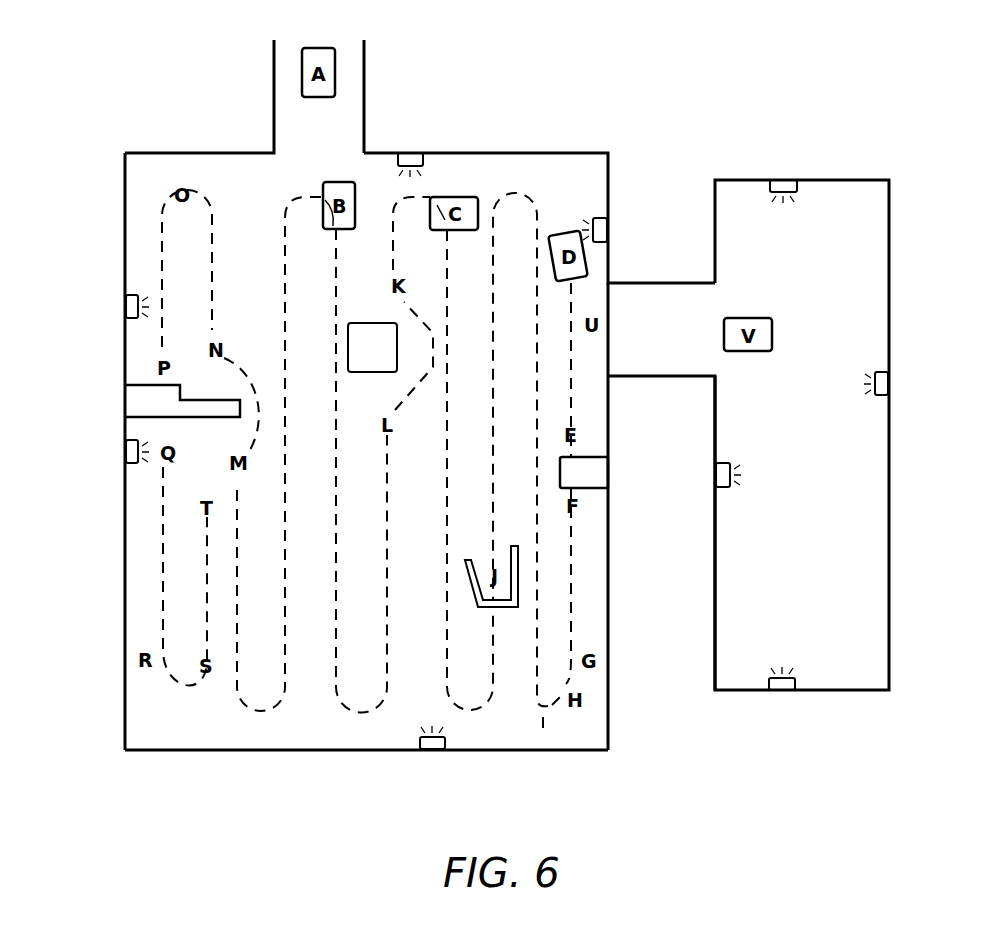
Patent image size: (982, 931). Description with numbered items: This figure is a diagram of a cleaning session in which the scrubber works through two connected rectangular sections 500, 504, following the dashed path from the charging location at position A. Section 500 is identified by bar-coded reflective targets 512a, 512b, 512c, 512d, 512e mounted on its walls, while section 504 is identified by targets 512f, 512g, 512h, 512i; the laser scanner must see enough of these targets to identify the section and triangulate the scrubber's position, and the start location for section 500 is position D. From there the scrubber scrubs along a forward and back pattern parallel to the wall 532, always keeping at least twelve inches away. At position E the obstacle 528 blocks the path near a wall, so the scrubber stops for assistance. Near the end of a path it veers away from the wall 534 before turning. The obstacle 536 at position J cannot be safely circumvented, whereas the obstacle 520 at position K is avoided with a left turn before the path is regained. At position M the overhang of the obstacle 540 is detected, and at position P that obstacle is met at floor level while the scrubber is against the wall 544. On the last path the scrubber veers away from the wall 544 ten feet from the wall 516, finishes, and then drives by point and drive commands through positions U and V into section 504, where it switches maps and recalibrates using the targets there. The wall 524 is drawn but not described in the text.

The section 500 is at (140, 261).
The section 504 is at (889, 275).
The target 512a is at (408, 153).
The target 512b is at (607, 233).
The target 512c is at (432, 749).
The target 512d is at (127, 452).
The target 512e is at (127, 307).
The target 512f is at (781, 180).
The target 512g is at (889, 380).
The target 512h is at (782, 690).
The target 512i is at (730, 472).
The wall 516 is at (158, 750).
The obstacle 520 is at (372, 347).
The wall 524 is at (607, 153).
The obstacle 528 is at (600, 478).
The wall 532 is at (608, 431).
The wall 534 is at (608, 660).
The obstacle 536 is at (466, 560).
The obstacle 540 is at (125, 401).
The wall 544 is at (125, 505).